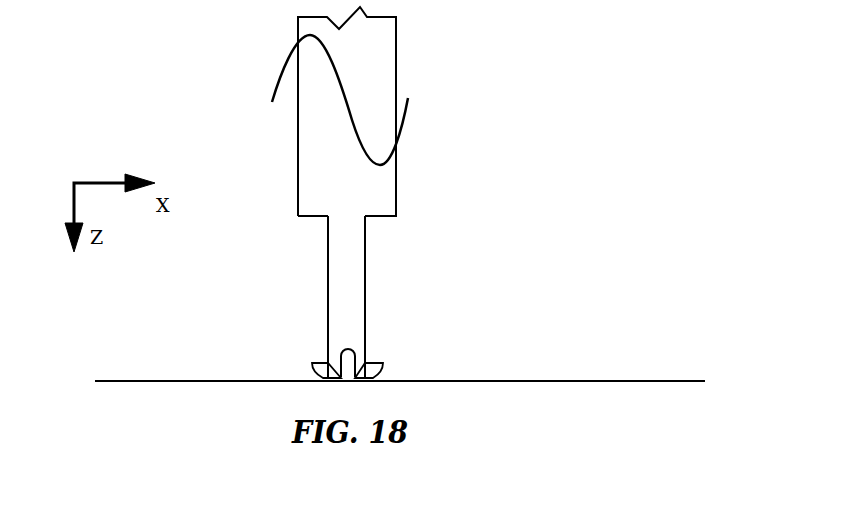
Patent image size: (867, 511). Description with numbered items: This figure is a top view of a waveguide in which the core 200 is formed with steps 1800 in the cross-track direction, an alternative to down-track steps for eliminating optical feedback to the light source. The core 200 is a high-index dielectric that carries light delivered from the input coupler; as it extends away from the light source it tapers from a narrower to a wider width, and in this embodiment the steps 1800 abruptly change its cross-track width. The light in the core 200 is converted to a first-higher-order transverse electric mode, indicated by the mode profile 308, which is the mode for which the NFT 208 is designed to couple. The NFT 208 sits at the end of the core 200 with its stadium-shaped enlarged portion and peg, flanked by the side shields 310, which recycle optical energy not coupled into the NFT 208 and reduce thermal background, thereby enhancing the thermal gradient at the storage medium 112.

The core 200 is at (297, 137).
The steps 1800 is at (311, 244).
The mode profile 308 is at (411, 97).
The NFT 208 is at (343, 362).
The side shields 310 is at (382, 370).
The substrate 112 is at (660, 382).